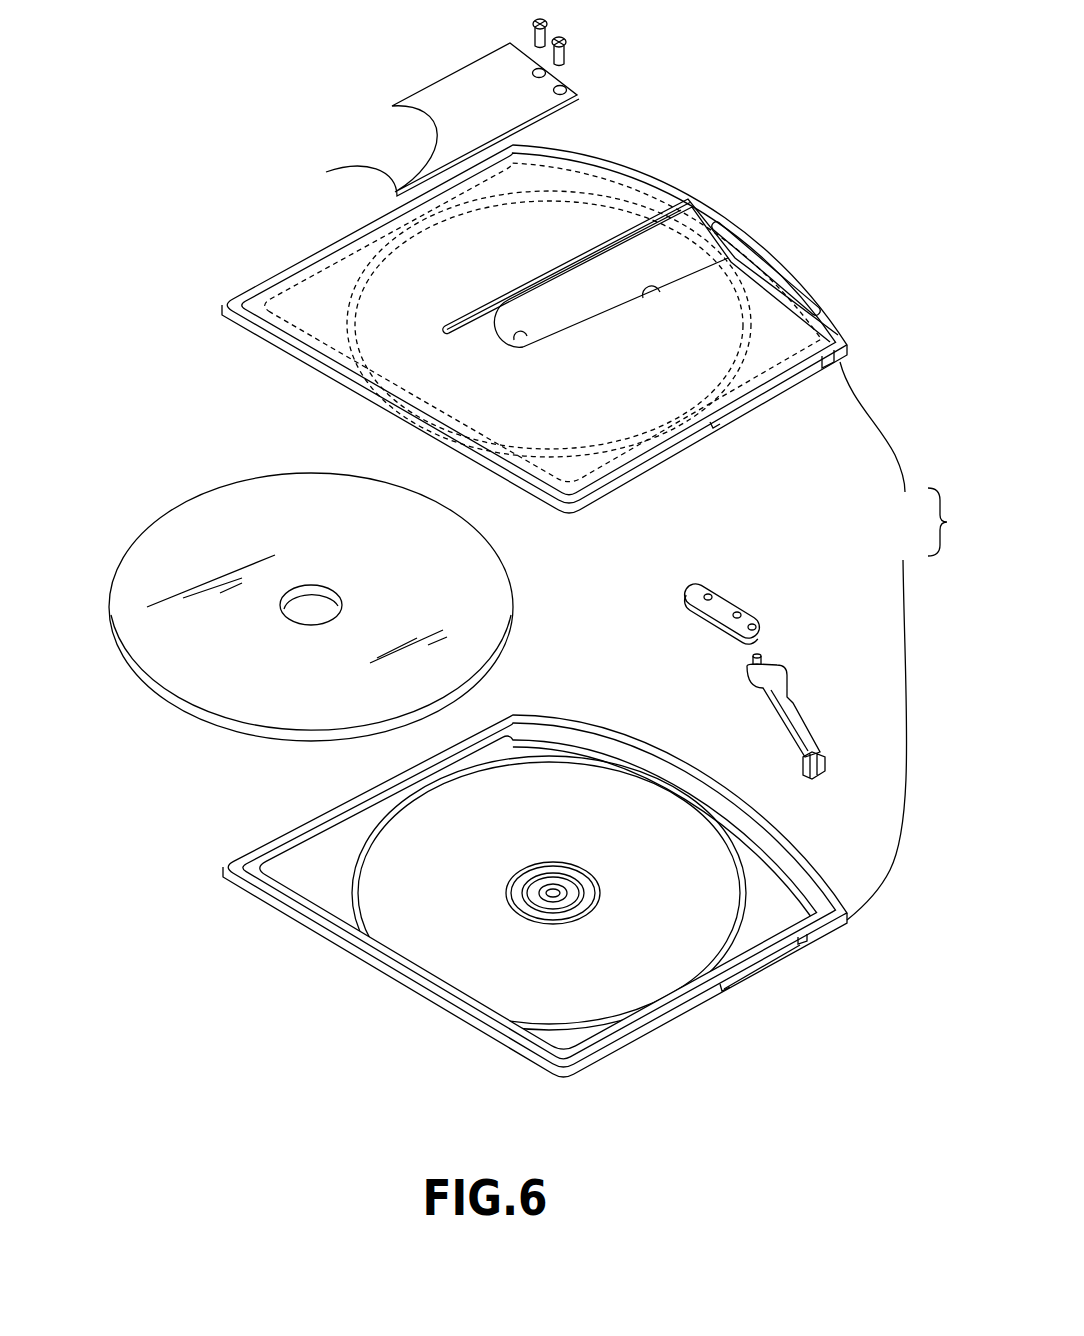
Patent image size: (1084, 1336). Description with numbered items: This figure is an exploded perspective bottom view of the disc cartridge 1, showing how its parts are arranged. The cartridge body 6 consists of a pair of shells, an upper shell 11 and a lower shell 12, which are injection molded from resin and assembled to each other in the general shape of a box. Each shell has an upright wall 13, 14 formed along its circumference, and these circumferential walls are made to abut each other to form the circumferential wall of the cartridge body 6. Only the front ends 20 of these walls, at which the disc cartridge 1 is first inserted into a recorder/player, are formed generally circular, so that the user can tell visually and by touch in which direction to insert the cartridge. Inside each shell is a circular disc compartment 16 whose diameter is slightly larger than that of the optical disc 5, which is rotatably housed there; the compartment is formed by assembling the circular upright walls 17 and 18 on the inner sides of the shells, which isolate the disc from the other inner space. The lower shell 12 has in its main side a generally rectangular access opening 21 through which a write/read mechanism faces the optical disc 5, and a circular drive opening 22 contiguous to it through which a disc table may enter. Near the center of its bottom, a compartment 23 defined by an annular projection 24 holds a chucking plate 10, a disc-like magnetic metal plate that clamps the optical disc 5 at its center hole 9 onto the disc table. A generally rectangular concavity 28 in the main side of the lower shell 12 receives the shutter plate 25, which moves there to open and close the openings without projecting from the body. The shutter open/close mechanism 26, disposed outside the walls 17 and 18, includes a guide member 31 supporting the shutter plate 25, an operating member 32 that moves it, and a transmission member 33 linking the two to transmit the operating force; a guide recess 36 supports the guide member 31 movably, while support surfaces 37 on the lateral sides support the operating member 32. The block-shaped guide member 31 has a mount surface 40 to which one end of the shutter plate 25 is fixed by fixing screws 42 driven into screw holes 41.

The disc cartridge 1 is at (254, 994).
The optical disc 5 is at (165, 550).
The cartridge body 6 is at (903, 641).
The center hole 9 is at (292, 612).
The chucking plate 10 is at (556, 882).
The upper shell 11 is at (883, 723).
The lower shell 12 is at (880, 441).
The upright wall 13 is at (567, 1072).
The upright wall 14 is at (678, 447).
The disc compartment 16 is at (392, 355).
The circular upright wall 17 is at (348, 870).
The circular upright wall 18 is at (760, 385).
The front end 20 is at (646, 165).
The access opening 21 is at (663, 293).
The drive opening 22 is at (520, 336).
The compartment 23 is at (514, 878).
The annular projection 24 is at (506, 893).
The shutter plate 25 is at (413, 118).
The shutter open/close mechanism 26 is at (800, 615).
The concavity 28 is at (445, 328).
The guide member 31 is at (727, 603).
The operating member 32 is at (827, 763).
The transmission member 33 is at (780, 683).
The guide recess 36 is at (743, 247).
The support surface 37 is at (752, 397).
The mount surface 40 is at (687, 578).
The screw hole 41 is at (708, 594).
The fixing screw 42 is at (548, 26).